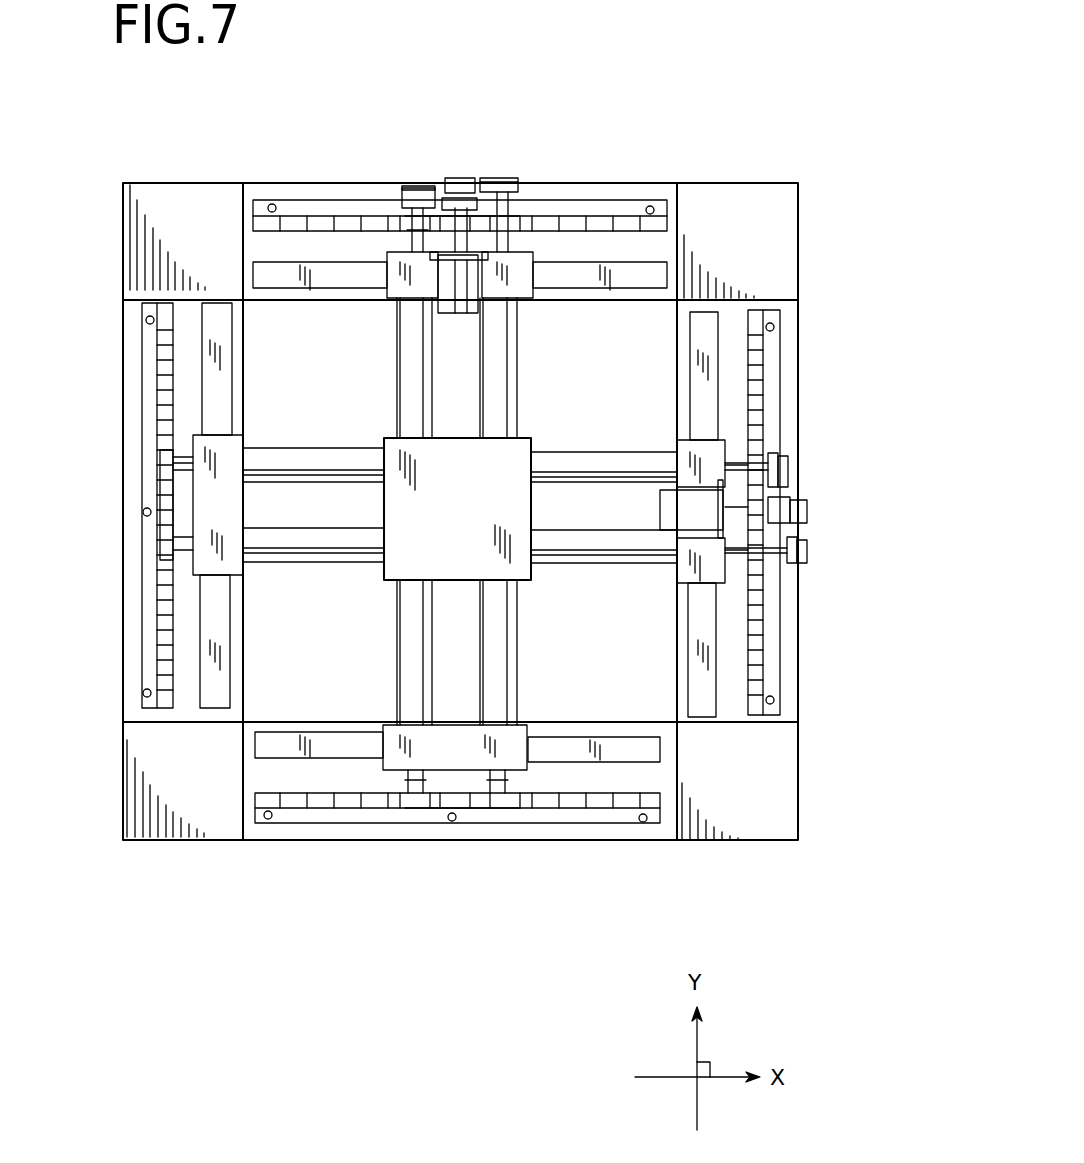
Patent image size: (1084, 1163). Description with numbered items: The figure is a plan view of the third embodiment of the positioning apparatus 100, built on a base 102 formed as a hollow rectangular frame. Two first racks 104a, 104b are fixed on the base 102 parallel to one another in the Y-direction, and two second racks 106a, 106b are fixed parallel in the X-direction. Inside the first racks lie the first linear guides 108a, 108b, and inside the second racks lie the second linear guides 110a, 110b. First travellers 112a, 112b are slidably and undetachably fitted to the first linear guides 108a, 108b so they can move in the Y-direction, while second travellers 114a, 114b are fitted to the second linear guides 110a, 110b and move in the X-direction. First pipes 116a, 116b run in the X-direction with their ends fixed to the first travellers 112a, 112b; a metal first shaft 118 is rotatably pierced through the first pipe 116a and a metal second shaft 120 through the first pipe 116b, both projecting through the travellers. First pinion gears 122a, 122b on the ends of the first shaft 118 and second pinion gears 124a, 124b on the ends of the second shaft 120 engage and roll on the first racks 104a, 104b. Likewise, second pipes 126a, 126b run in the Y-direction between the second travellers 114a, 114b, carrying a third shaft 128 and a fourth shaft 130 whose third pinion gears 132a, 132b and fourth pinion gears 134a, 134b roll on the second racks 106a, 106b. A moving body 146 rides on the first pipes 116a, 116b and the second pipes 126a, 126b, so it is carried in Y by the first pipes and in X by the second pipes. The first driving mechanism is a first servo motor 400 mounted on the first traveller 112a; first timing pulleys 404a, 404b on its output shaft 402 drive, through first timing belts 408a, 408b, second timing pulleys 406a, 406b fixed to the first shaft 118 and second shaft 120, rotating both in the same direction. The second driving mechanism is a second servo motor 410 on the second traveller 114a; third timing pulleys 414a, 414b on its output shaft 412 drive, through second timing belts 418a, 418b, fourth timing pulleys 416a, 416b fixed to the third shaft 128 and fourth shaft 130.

The positioning apparatus 100 is at (730, 140).
The base 102 is at (800, 770).
The first rack 104a is at (770, 325).
The first rack 104b is at (165, 356).
The second rack 106a is at (265, 218).
The second rack 106b is at (297, 812).
The first linear guide 108a is at (705, 720).
The first linear guide 108b is at (155, 680).
The second linear guide 110a is at (255, 272).
The second linear guide 110b is at (265, 745).
The first traveller 112a is at (715, 600).
The first traveller 112b is at (220, 580).
The second traveller 114a is at (590, 270).
The second traveller 114b is at (465, 768).
The first pipe 116a is at (345, 450).
The first pipe 116b is at (345, 563).
The first shaft 118 is at (195, 460).
The second shaft 120 is at (165, 540).
The first pinion gear 122a is at (770, 462).
The first pinion gear 122b is at (175, 463).
The second pinion gear 124a is at (765, 552).
The second pinion gear 124b is at (175, 545).
The second pipe 126a is at (500, 682).
The second pipe 126b is at (400, 682).
The third shaft 128 is at (522, 790).
The fourth shaft 130 is at (395, 788).
The third pinion gear 132a is at (535, 222).
The third pinion gear 132b is at (498, 805).
The fourth pinion gear 134a is at (398, 205).
The fourth pinion gear 134b is at (412, 810).
The moving body 146 is at (460, 572).
The first servo motor 400 is at (662, 512).
The output shaft 402 is at (690, 442).
The first timing pulley 404a is at (795, 505).
The first timing pulley 404b is at (806, 518).
The second timing pulley 406a is at (786, 470).
The second timing pulley 406b is at (798, 550).
The first timing belt 408a is at (775, 465).
The first timing belt 408b is at (802, 558).
The second servo motor 410 is at (455, 315).
The output shaft 412 is at (465, 235).
The third timing pulley 414a is at (460, 178).
The third timing pulley 414b is at (445, 180).
The fourth timing pulley 416a is at (512, 185).
The fourth timing pulley 416b is at (405, 190).
The second timing belt 418a is at (492, 178).
The second timing belt 418b is at (415, 187).